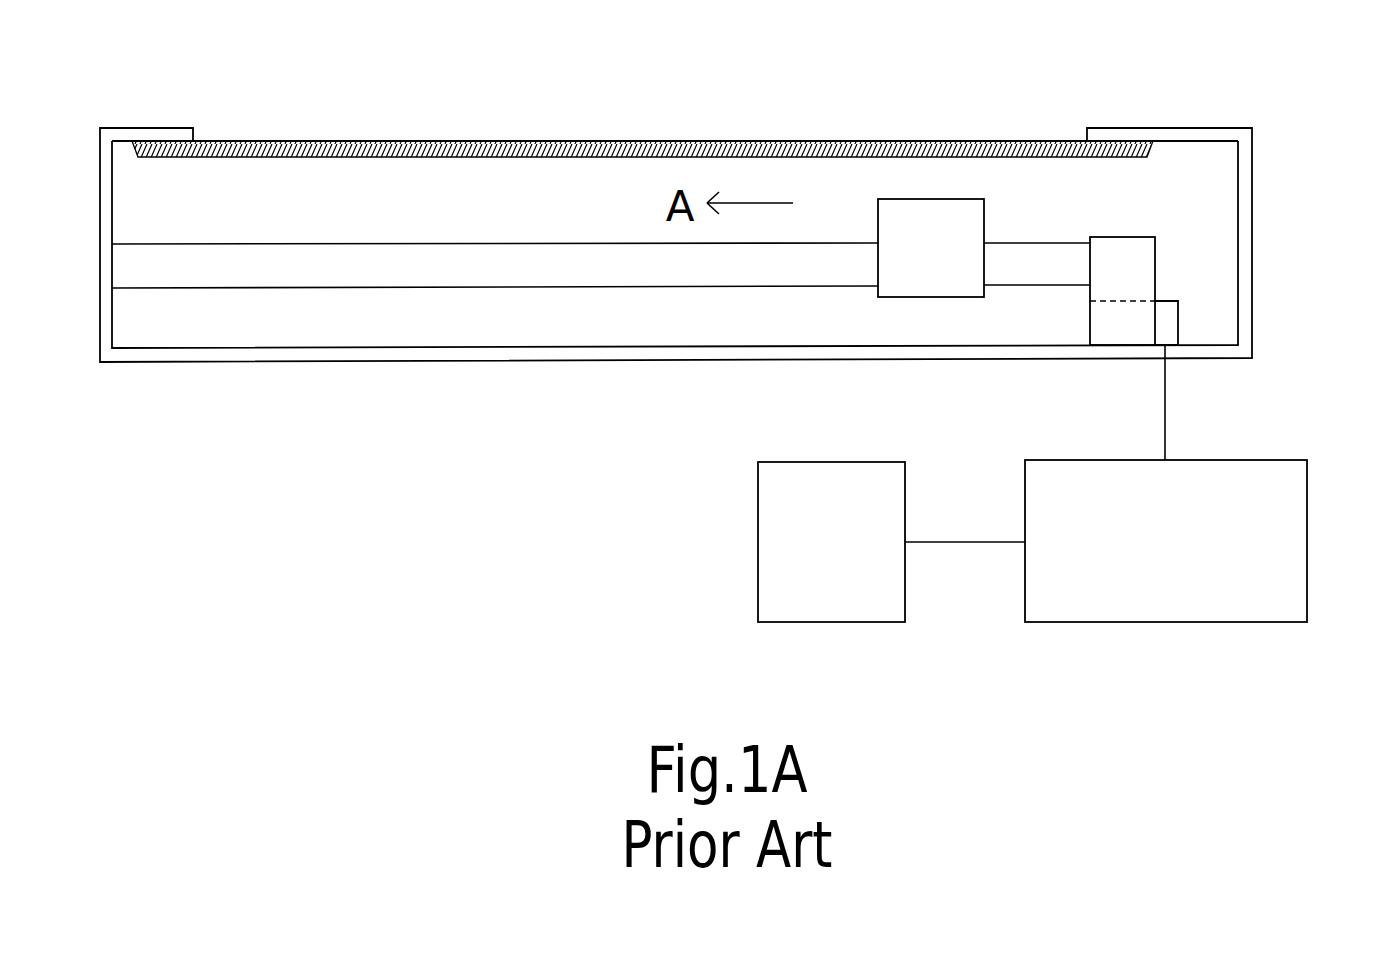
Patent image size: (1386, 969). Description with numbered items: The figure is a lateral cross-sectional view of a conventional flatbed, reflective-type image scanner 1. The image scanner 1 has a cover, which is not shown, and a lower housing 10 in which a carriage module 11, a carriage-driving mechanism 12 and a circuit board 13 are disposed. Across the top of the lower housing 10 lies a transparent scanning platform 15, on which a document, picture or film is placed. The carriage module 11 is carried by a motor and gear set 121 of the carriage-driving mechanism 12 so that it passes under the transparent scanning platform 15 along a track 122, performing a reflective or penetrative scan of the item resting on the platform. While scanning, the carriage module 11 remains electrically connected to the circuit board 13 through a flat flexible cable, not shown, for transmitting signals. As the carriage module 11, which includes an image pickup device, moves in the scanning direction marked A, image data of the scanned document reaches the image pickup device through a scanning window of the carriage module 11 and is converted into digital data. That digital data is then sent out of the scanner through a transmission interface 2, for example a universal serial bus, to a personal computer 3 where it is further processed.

The image scanner 1 is at (490, 105).
The lower housing 10 is at (1193, 287).
The carriage module 11 is at (912, 222).
The carriage-driving mechanism 12 is at (1150, 198).
The motor and gear set 121 is at (1135, 270).
The track 122 is at (1012, 257).
The circuit board 13 is at (1167, 335).
The transparent scanning platform 15 is at (750, 141).
The transmission interface 2 is at (1285, 594).
The personal computer 3 is at (883, 595).